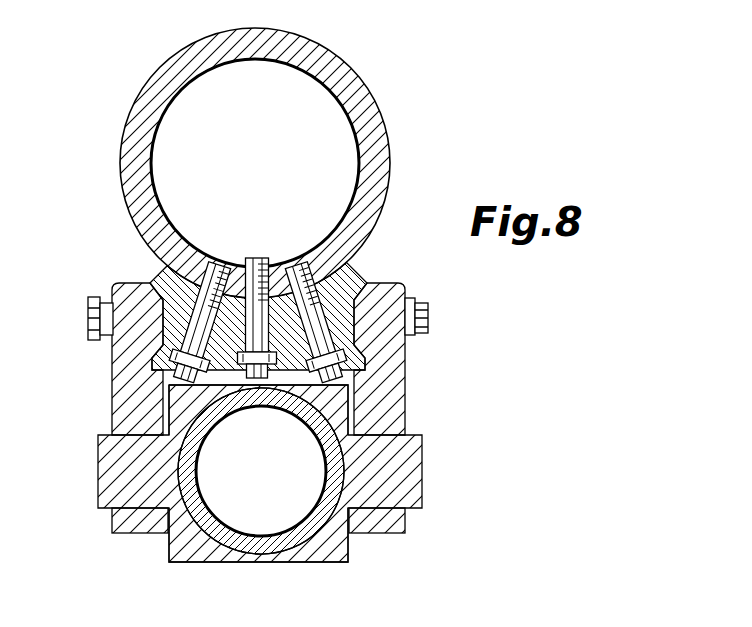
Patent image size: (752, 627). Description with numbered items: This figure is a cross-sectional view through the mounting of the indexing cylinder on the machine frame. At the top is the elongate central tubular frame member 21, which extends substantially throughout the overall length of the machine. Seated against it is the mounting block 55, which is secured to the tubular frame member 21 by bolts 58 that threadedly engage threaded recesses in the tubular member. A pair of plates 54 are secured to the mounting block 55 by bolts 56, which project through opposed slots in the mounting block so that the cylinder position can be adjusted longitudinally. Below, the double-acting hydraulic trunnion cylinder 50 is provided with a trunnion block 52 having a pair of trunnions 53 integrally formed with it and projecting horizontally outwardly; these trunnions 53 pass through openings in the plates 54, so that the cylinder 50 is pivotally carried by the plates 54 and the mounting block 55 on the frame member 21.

The tubular frame member 21 is at (363, 82).
The hydraulic trunnion cylinder 50 is at (283, 542).
The trunnion block 52 is at (197, 546).
The trunnions 53 is at (422, 465).
The plates 54 is at (112, 372).
The mounting block 55 is at (360, 271).
The bolts 56 is at (88, 320).
The bolts 58 is at (288, 259).